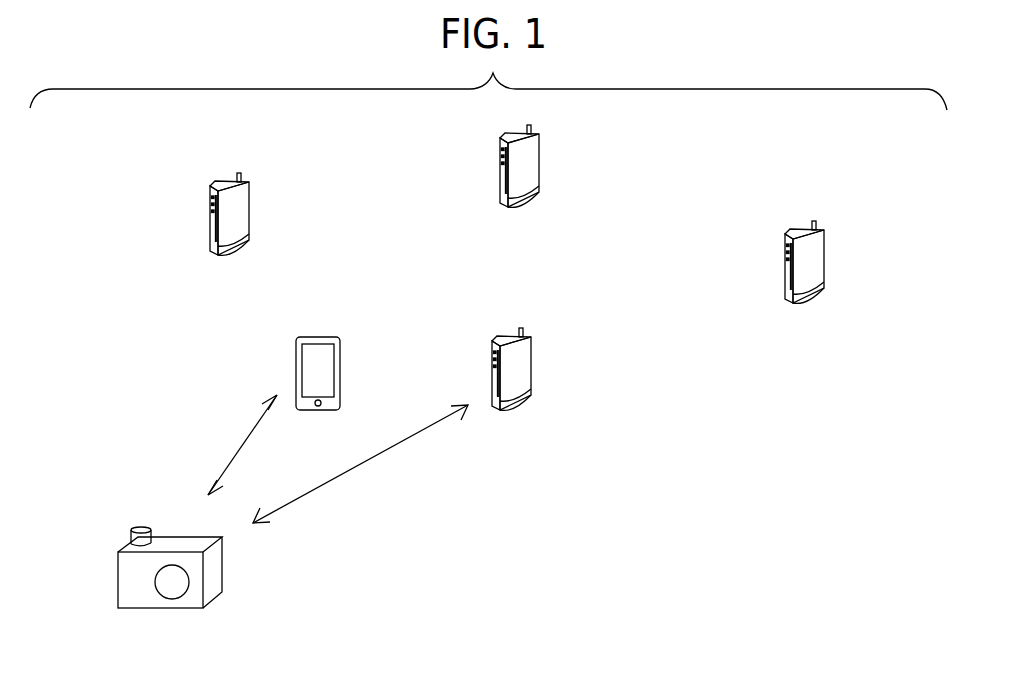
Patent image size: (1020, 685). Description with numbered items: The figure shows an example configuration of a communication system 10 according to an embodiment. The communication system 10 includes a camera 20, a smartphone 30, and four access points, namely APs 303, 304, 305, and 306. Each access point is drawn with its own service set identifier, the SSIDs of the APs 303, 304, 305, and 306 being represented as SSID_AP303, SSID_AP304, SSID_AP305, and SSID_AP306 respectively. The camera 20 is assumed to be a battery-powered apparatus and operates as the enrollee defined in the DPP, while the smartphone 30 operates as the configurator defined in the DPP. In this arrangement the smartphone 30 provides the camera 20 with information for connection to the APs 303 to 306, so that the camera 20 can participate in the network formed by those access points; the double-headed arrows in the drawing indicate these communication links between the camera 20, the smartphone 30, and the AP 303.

The communication system 10 is at (553, 492).
The camera 20 is at (118, 568).
The smartphone 30 is at (296, 350).
The AP 303 is at (531, 347).
The AP 304 is at (210, 197).
The AP 305 is at (500, 148).
The AP 306 is at (785, 244).